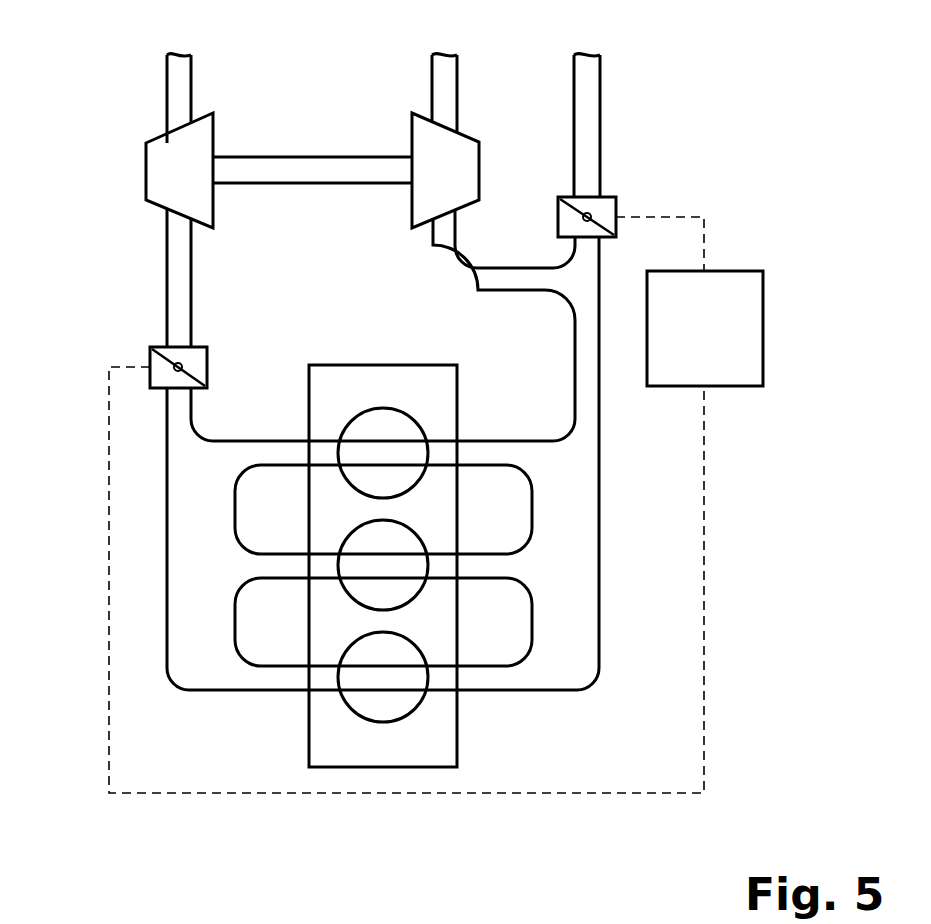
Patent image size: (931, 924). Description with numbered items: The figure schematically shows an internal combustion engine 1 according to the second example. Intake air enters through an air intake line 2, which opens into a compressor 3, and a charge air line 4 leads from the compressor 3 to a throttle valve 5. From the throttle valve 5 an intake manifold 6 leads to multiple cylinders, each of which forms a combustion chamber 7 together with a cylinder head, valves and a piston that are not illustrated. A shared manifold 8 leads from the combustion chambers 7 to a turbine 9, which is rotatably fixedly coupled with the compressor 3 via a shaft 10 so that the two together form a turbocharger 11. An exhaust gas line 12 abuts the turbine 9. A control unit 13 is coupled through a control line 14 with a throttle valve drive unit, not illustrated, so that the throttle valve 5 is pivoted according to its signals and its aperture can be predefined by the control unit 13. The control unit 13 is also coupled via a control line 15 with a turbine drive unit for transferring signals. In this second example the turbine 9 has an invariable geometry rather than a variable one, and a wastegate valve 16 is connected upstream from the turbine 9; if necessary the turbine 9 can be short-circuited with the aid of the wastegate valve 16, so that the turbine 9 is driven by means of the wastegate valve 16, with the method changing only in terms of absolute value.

The internal combustion engine 1 is at (762, 200).
The air intake line 2 is at (167, 86).
The compressor 3 is at (146, 169).
The charge air line 4 is at (167, 282).
The throttle valve 5 is at (150, 360).
The intake manifold 6 is at (167, 492).
The combustion chamber 7 is at (383, 722).
The shared manifold 8 is at (600, 572).
The turbine 9 is at (412, 124).
The shaft 10 is at (258, 157).
The turbocharger 11 is at (254, 155).
The exhaust gas line 12 is at (458, 85).
The control unit 13 is at (764, 326).
The control line 14 is at (109, 703).
The control line 15 is at (673, 217).
The wastegate valve 16 is at (616, 197).